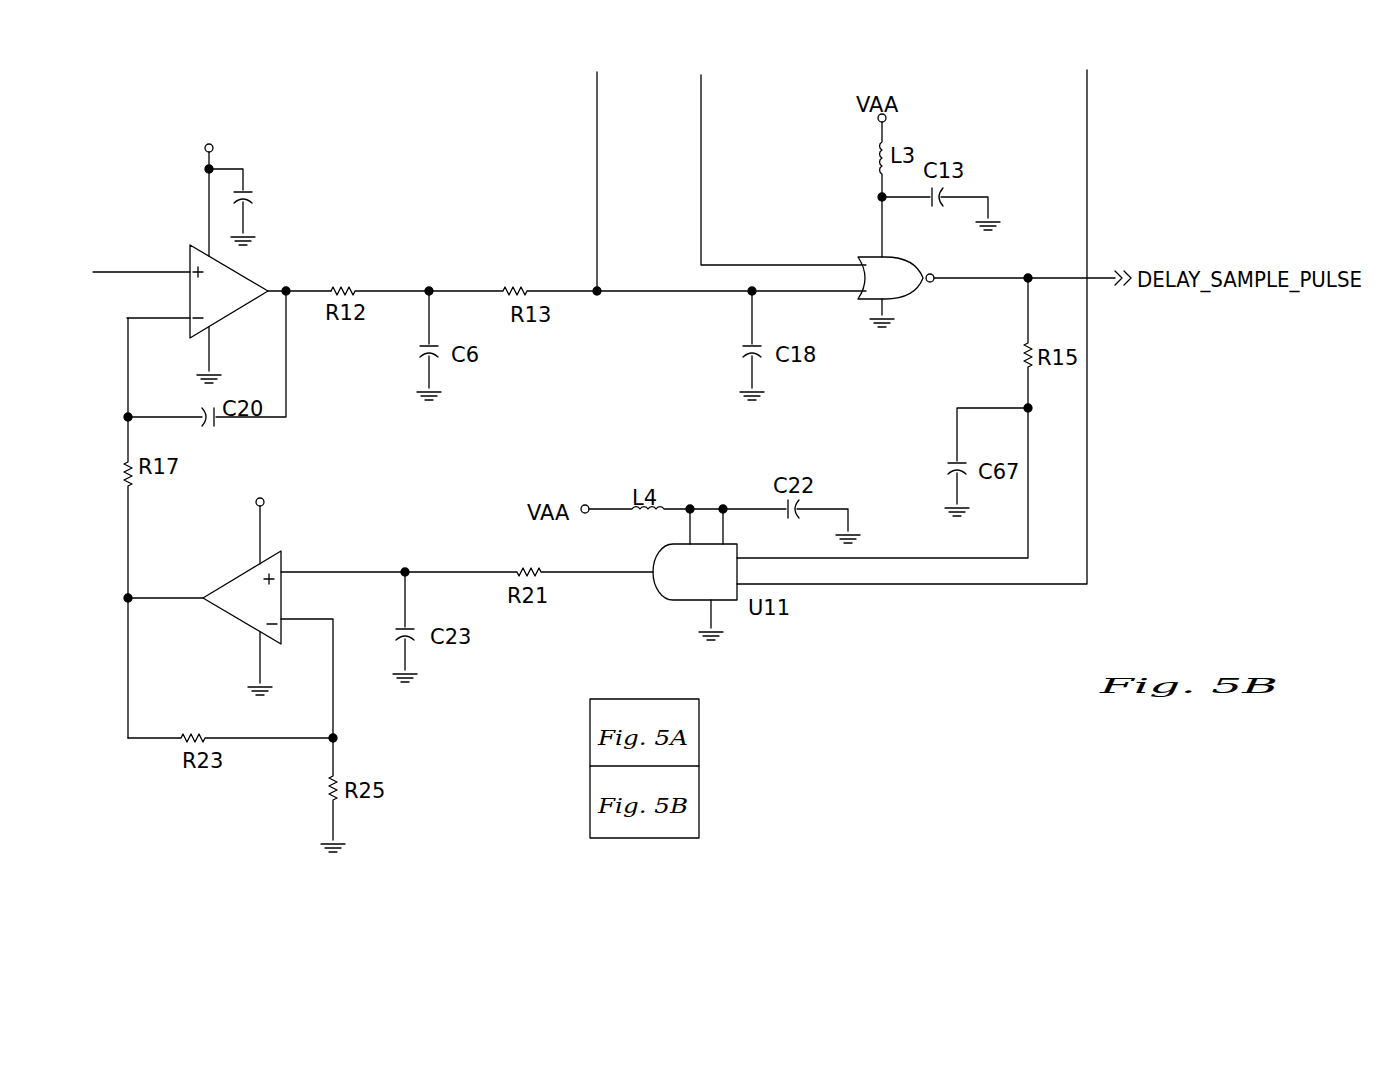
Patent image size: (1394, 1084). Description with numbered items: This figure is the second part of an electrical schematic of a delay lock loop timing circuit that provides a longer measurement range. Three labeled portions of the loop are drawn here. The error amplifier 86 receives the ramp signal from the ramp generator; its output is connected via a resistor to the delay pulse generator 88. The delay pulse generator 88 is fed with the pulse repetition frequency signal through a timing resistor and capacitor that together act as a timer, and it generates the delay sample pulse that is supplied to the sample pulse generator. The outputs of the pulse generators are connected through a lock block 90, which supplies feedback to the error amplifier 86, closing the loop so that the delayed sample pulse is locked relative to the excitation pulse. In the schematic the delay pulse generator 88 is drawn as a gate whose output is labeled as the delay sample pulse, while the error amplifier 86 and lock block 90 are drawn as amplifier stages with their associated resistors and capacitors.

The error amplifier 86 is at (312, 251).
The delay pulse generator 88 is at (950, 304).
The lock block 90 is at (460, 530).